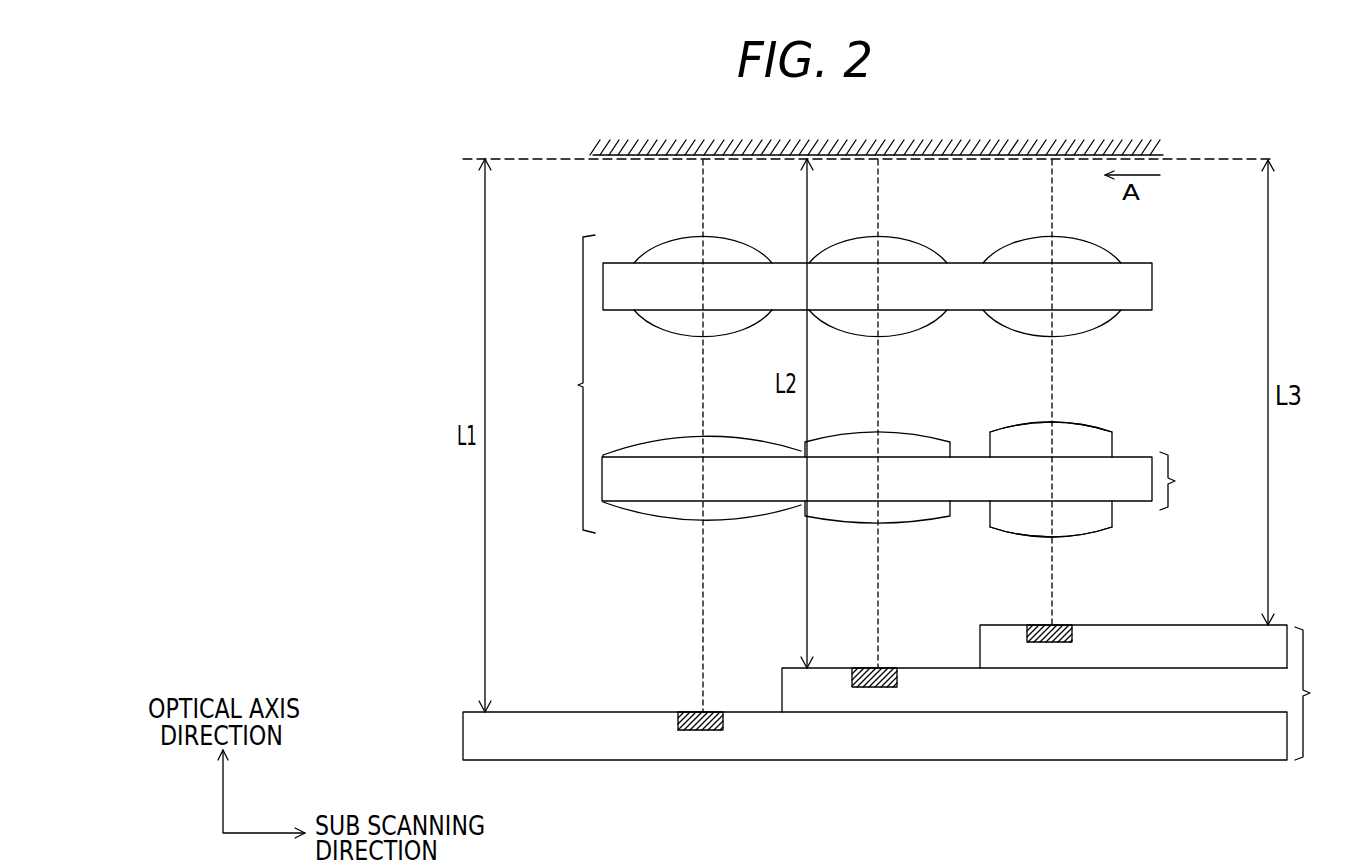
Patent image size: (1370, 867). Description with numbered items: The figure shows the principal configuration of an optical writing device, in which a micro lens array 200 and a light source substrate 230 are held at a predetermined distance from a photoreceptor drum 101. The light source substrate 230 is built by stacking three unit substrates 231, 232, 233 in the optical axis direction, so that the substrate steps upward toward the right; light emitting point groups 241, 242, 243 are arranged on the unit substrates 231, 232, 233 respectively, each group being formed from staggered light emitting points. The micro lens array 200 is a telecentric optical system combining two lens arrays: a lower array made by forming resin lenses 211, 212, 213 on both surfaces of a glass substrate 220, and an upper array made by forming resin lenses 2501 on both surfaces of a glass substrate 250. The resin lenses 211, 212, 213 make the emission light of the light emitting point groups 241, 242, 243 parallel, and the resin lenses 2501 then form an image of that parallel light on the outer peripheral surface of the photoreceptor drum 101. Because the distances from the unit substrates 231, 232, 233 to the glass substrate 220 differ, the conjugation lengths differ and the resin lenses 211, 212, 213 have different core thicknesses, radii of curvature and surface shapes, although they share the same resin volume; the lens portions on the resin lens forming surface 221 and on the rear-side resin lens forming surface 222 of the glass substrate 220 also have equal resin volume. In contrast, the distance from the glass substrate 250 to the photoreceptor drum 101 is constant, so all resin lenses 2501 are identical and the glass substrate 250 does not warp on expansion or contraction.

The photoreceptor drum 101 is at (608, 140).
The micro lens array 200 is at (879, 401).
The glass substrate 250 is at (913, 273).
The resin lens 2501 is at (905, 240).
The glass substrate 220 is at (911, 500).
The resin lens forming surface 221 is at (1135, 517).
The resin lens forming surface 222 is at (1135, 442).
The resin lens 211 is at (688, 522).
The resin lens 212 is at (860, 524).
The resin lens 213 is at (1035, 538).
The light source substrate 230 is at (909, 676).
The unit substrate 231 is at (603, 716).
The unit substrate 232 is at (795, 668).
The unit substrate 233 is at (1148, 630).
The light emitting point group 241 is at (683, 713).
The light emitting point group 242 is at (893, 668).
The light emitting point group 243 is at (1067, 625).